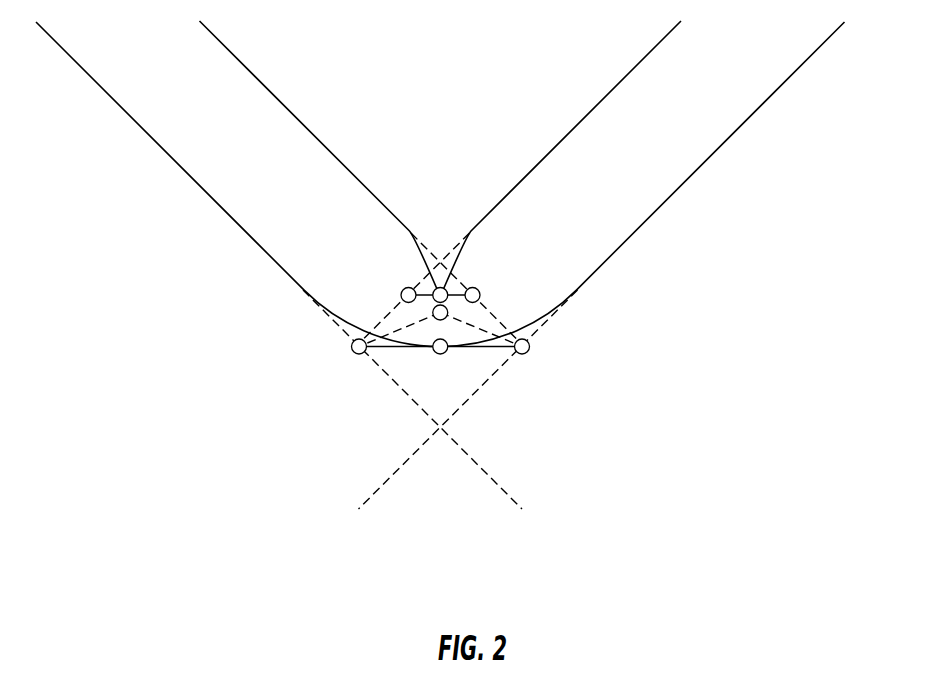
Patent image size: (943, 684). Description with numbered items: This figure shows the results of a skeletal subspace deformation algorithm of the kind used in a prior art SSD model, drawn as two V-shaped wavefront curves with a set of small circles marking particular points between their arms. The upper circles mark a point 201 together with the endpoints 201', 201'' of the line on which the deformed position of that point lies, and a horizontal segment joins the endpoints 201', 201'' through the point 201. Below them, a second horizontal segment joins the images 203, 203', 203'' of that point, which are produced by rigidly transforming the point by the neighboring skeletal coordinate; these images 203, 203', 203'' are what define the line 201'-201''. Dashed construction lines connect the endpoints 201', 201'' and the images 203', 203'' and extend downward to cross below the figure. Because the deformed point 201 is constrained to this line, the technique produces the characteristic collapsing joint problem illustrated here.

The point 201 is at (456, 245).
The line endpoint 201' is at (372, 279).
The line endpoint 201'' is at (507, 279).
The image of the point 203 is at (398, 382).
The image of the point 203' is at (326, 365).
The image of the point 203'' is at (557, 365).